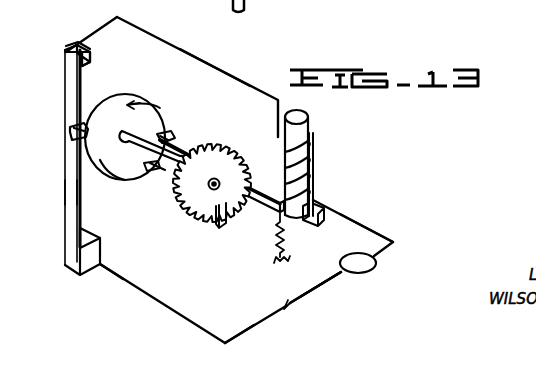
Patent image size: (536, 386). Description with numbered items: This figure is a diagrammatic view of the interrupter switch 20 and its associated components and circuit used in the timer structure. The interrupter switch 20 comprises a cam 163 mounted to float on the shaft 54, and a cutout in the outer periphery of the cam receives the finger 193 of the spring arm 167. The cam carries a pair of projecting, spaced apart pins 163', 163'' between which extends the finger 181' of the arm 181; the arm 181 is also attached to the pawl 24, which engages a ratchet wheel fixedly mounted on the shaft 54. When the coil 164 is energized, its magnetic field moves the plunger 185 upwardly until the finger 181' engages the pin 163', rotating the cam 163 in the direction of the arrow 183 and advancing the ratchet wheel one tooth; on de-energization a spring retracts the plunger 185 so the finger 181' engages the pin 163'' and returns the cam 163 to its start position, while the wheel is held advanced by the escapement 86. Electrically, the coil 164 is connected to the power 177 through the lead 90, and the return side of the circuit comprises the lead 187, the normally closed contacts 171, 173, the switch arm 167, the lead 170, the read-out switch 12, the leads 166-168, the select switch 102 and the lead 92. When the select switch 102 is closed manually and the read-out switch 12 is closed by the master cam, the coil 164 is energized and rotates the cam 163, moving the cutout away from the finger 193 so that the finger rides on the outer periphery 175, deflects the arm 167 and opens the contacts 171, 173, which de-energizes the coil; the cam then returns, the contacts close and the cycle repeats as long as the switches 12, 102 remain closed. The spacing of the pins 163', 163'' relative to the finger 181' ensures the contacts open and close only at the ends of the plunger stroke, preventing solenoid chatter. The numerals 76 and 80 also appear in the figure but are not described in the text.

The read-out switch 12 is at (152, 295).
The interrupter switch 20 is at (63, 75).
The pawl 24 is at (248, 182).
The shaft 54 is at (160, 172).
The connector 76 is at (447, 3).
The resistor 80 is at (275, 260).
The escapement 86 is at (228, 223).
The lead 90 is at (357, 219).
The lead 92 is at (329, 284).
The select switch 102 is at (291, 302).
The cam 163 is at (168, 100).
The pin 163' is at (195, 125).
The pin 163'' is at (148, 188).
The coil 164 is at (313, 160).
The leads 166-168 is at (255, 326).
The spring arm 167 is at (73, 192).
The lead 170 is at (122, 277).
The contact 171 is at (88, 50).
The contact 173 is at (71, 46).
The outer periphery 175 is at (101, 172).
The power 177 is at (377, 264).
The arm 181 is at (168, 146).
The finger 181' is at (149, 128).
The arrow 183 is at (130, 104).
The plunger 185 is at (314, 132).
The lead 187 is at (217, 70).
The finger 193 is at (71, 133).